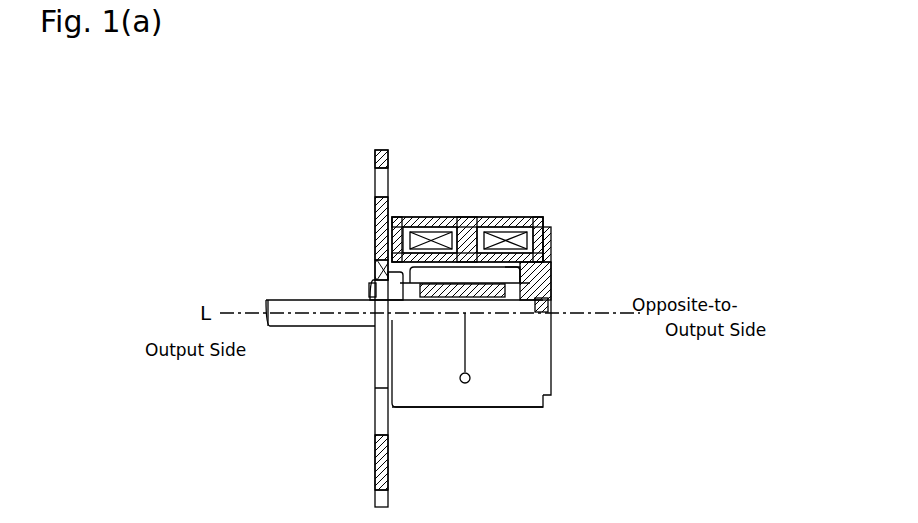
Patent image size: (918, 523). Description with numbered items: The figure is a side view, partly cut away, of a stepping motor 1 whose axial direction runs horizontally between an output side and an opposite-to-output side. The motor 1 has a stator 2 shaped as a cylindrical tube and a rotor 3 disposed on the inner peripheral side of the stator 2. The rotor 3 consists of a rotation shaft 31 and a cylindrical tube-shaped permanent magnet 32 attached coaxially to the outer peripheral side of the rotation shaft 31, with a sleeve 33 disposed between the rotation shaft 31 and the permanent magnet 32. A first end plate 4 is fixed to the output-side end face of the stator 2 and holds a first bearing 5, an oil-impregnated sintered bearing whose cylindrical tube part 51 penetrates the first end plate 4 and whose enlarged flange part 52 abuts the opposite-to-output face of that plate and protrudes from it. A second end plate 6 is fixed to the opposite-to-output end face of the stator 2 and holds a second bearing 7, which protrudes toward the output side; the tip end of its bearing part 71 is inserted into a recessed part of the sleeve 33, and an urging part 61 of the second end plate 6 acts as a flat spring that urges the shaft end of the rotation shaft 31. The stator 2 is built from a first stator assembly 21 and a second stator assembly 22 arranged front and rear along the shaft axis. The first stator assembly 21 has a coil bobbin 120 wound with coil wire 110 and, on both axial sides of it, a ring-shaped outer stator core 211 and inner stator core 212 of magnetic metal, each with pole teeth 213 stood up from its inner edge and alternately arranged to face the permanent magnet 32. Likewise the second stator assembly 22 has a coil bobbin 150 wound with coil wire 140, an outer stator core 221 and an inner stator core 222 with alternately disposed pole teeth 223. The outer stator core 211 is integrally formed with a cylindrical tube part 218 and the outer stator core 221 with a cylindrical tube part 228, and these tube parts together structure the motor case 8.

The motor 1 is at (318, 158).
The stator 2 is at (553, 222).
The rotor 3 is at (371, 314).
The first end plate 4 is at (379, 150).
The first bearing 5 is at (283, 233).
The second end plate 6 is at (551, 250).
The second bearing 7 is at (553, 288).
The motor case 8 is at (530, 451).
The first stator assembly 21 is at (542, 97).
The second stator assembly 22 is at (503, 99).
The rotation shaft 31 is at (306, 300).
The permanent magnet 32 is at (433, 300).
The sleeve 33 is at (453, 298).
The cylindrical tube part 51 is at (370, 290).
The flange part 52 is at (375, 268).
The urging part 61 is at (548, 310).
The bearing part 71 is at (512, 297).
The coil wire 110 is at (502, 240).
The coil bobbin 120 is at (530, 243).
The coil wire 140 is at (430, 238).
The coil bobbin 150 is at (442, 243).
The outer stator core 211 is at (548, 217).
The inner stator core 212 is at (476, 217).
The pole teeth 213 is at (506, 290).
The cylindrical tube part 218 is at (513, 394).
The outer stator core 221 is at (398, 217).
The inner stator core 222 is at (464, 218).
The pole teeth 223 is at (388, 320).
The cylindrical tube part 228 is at (450, 394).